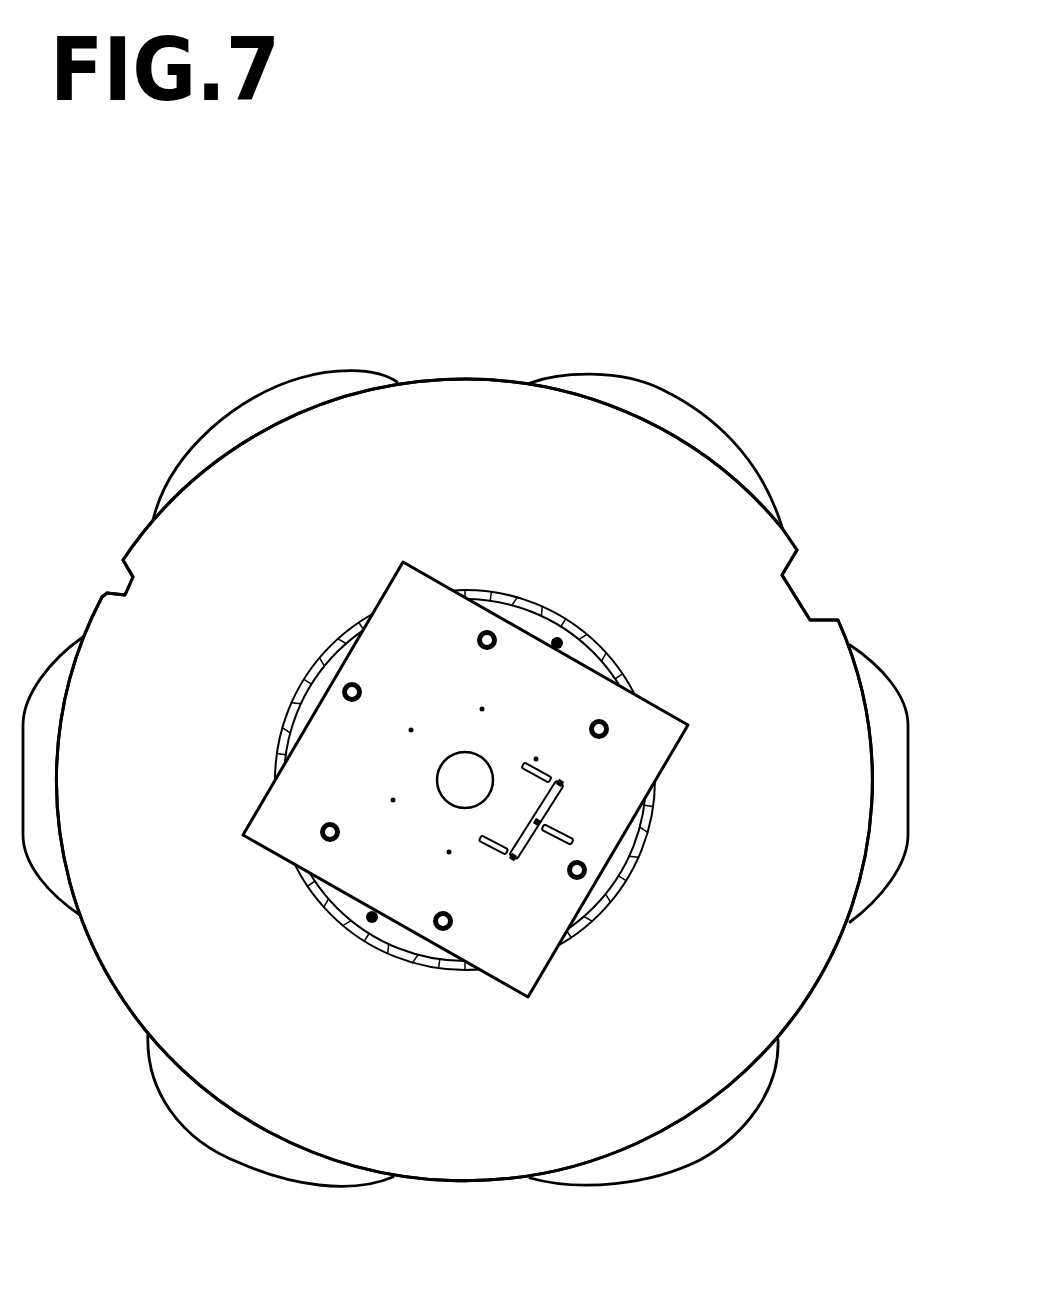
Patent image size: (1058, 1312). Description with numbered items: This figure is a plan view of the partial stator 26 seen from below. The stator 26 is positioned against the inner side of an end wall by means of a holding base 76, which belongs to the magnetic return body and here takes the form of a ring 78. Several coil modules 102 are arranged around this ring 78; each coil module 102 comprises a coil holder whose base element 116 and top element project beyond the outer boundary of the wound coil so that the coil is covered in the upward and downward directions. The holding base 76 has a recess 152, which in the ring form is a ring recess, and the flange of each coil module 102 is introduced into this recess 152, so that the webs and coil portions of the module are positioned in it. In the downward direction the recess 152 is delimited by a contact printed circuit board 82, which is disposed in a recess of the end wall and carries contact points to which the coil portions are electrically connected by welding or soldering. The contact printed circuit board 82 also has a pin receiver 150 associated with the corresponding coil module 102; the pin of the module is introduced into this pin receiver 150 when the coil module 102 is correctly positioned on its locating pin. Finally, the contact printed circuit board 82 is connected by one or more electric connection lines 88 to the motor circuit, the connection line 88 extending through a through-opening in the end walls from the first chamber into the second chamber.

The stator 26 is at (810, 457).
The holding base 76 is at (802, 962).
The ring 78 is at (465, 408).
The contact printed circuit board 82 is at (642, 745).
The electric connection line 88 is at (543, 850).
The coil module 102 is at (289, 373).
The base element 116 is at (220, 430).
The pin receiver 150 is at (497, 642).
The recess 152 is at (348, 920).